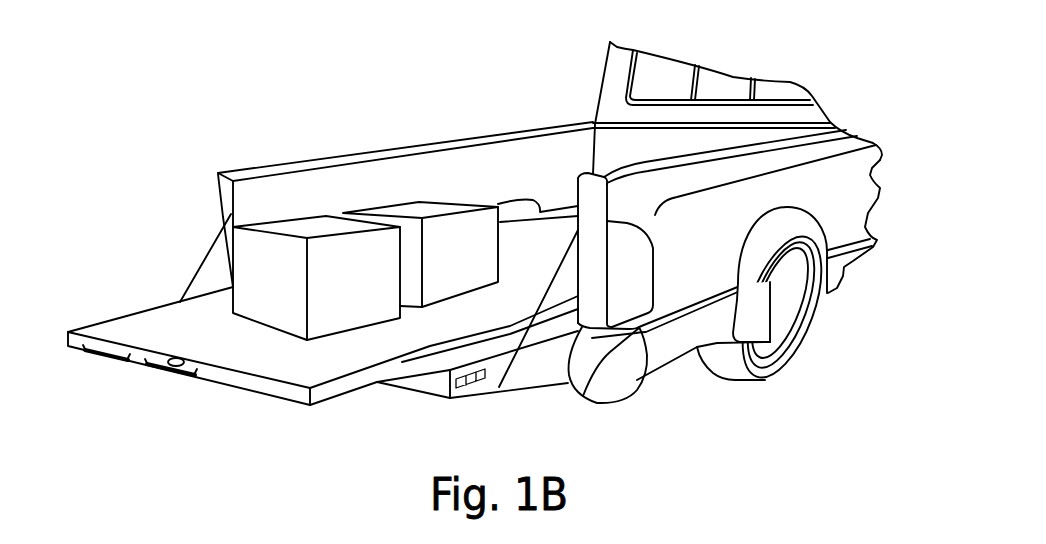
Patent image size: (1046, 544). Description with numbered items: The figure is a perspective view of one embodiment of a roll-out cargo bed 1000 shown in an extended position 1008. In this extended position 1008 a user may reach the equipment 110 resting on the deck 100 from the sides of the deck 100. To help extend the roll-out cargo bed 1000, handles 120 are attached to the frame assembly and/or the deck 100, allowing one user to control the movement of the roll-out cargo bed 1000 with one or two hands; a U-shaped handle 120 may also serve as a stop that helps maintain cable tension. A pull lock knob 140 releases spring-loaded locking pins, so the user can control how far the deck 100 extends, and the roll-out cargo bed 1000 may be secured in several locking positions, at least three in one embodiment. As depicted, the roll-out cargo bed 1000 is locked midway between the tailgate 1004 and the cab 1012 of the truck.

The cab 1012 is at (612, 86).
The roll-out cargo bed 1000 is at (123, 293).
The deck 100 is at (175, 337).
The handle 120 is at (100, 357).
The pull lock knob 140 is at (177, 358).
The equipment 110 is at (368, 287).
The tailgate 1004 is at (427, 381).
The extended position 1008 is at (130, 426).